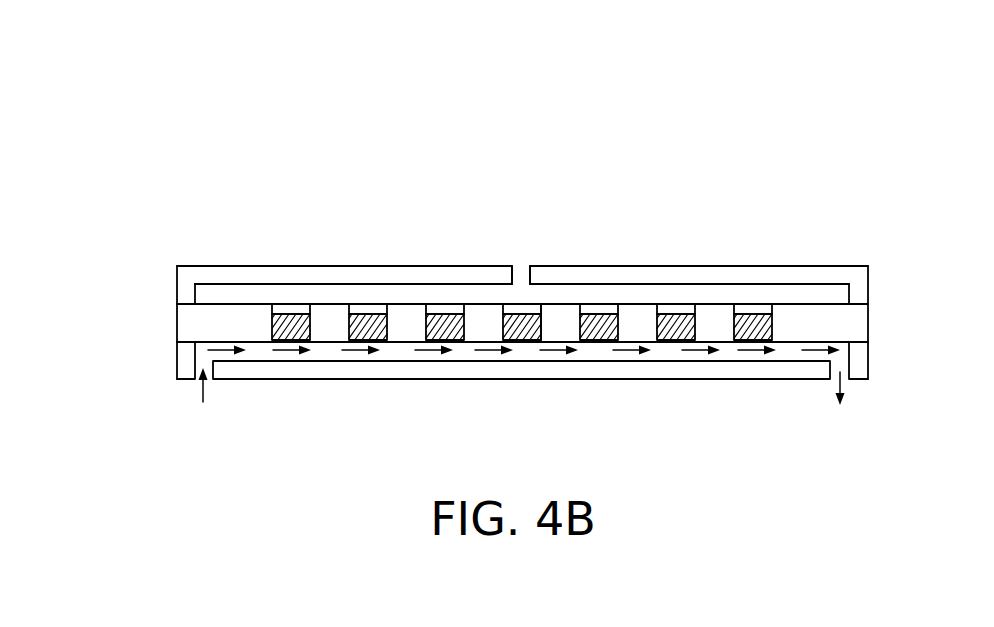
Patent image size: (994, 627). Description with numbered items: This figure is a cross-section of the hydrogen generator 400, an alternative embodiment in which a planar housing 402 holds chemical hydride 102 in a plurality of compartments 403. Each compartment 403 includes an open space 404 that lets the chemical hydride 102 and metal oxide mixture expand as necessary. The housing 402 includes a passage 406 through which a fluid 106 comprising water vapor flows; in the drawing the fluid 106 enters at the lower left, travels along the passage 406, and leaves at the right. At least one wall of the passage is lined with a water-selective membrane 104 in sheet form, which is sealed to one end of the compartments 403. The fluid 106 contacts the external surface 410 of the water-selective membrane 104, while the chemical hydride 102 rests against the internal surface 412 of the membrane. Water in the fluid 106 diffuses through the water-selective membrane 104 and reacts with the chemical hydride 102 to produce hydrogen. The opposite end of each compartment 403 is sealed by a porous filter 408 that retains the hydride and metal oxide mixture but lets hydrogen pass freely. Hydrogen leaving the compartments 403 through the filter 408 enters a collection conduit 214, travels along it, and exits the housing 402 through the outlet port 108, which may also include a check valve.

The hydrogen generator 400 is at (140, 97).
The planar housing 402 is at (218, 322).
The collection conduit 214 is at (473, 292).
The outlet port 108 is at (522, 266).
The filter 408 is at (366, 304).
The water-selective membrane 104 is at (419, 342).
The internal surface 412 is at (503, 320).
The external surface 410 is at (538, 327).
The chemical hydride 102 is at (600, 327).
The open space 404 is at (603, 310).
The compartments 403 is at (703, 315).
The passage 406 is at (660, 348).
The fluid 106 is at (203, 400).